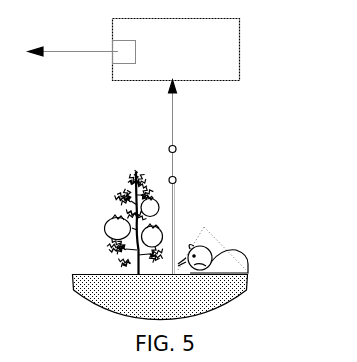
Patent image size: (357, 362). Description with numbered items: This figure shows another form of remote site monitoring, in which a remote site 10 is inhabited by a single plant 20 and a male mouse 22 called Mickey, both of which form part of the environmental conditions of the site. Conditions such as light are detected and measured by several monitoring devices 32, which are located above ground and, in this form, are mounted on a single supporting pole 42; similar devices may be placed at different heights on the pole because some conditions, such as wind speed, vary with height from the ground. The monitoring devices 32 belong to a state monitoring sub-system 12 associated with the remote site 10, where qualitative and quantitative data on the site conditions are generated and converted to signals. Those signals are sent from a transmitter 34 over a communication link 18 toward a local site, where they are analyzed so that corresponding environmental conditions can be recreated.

The remote site 10 is at (270, 204).
The state monitoring sub-system 12 is at (243, 50).
The communication link 18 is at (87, 50).
The plant 20 is at (120, 205).
The male mouse 22 is at (205, 252).
The monitoring devices 32 is at (175, 178).
The transmitter 34 is at (118, 51).
The supporting pole 42 is at (174, 200).